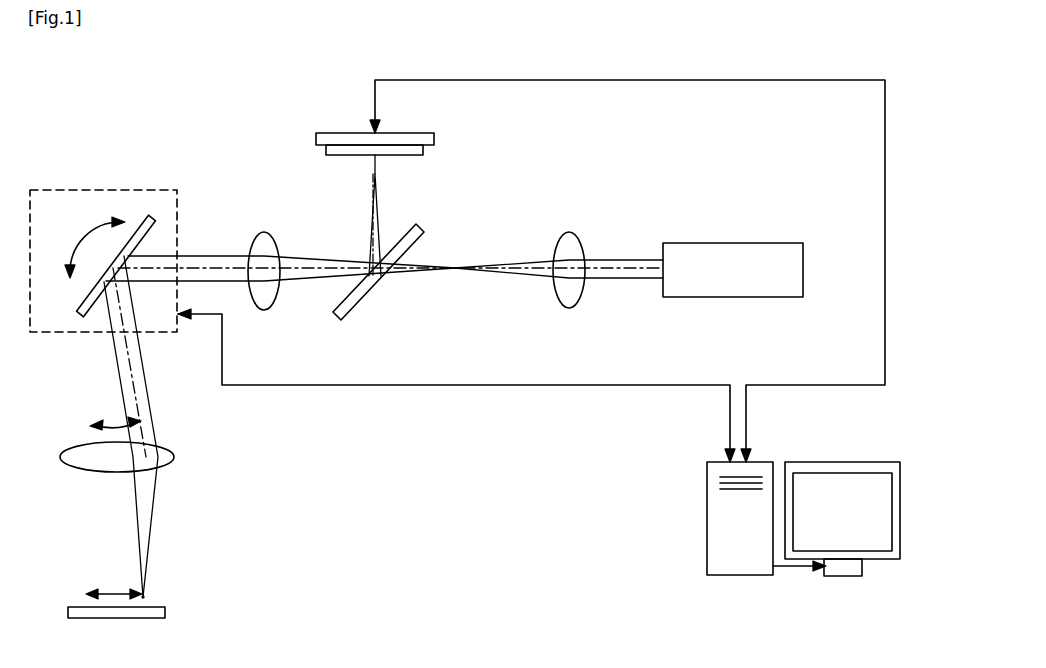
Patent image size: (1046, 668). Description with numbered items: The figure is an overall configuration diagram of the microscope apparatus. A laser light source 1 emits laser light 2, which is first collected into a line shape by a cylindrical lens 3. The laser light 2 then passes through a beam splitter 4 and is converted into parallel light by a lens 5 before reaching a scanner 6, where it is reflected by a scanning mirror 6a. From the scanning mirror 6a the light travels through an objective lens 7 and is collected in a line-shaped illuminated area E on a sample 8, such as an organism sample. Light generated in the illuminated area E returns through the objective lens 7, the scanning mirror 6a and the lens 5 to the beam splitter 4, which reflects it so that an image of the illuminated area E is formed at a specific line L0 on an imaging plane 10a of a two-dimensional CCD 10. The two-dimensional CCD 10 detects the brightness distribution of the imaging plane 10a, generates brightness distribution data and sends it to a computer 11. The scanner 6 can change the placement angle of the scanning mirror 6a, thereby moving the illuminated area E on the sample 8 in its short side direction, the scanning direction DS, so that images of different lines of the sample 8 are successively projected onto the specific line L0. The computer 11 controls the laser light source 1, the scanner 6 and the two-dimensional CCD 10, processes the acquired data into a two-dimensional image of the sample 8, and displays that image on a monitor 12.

The laser light source 1 is at (752, 242).
The laser light 2 is at (626, 262).
The cylindrical lens 3 is at (570, 240).
The beam splitter 4 is at (427, 235).
The lens 5 is at (266, 242).
The scanner 6 is at (150, 190).
The scanning mirror 6a is at (150, 222).
The objective lens 7 is at (177, 457).
The sample 8 is at (157, 613).
The two-dimensional CCD 10 is at (327, 132).
The imaging plane 10a is at (407, 156).
The computer 11 is at (710, 513).
The monitor 12 is at (850, 462).
The specific line L0 is at (367, 176).
The scanning direction DS is at (112, 592).
The illuminated area E is at (151, 592).